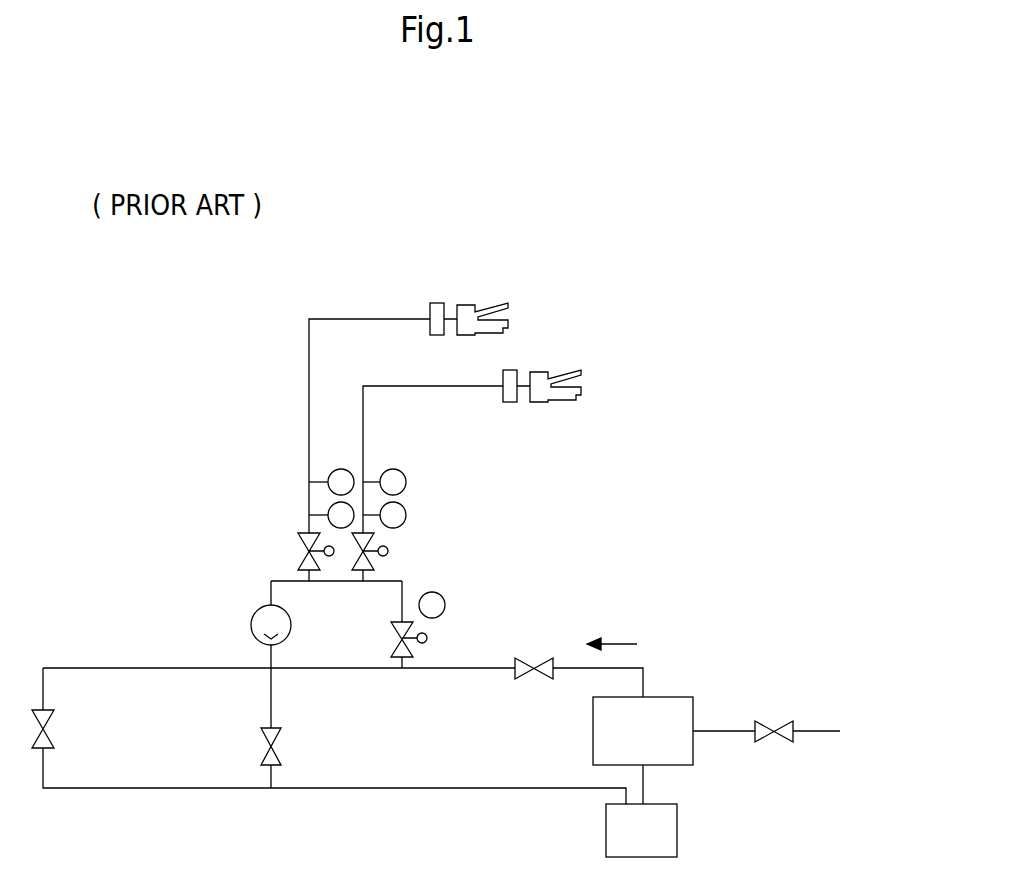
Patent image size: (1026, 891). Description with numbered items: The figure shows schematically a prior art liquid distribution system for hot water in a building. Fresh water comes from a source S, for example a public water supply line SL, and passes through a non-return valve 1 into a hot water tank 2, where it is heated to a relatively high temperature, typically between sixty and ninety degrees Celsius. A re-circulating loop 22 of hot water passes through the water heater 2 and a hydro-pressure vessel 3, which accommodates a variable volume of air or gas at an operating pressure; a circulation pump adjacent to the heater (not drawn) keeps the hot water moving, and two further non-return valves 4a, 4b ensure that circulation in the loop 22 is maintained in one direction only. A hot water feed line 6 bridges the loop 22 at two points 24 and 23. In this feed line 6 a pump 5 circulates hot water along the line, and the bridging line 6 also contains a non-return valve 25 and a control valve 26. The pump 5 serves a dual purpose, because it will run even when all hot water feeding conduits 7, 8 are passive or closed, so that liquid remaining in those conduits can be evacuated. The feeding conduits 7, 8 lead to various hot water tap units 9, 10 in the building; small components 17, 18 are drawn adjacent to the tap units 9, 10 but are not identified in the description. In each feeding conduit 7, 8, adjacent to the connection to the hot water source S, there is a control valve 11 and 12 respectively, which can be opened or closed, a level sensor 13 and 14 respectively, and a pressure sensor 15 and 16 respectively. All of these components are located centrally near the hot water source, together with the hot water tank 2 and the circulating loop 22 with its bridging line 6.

The non-return valve 1 is at (765, 720).
The hot water tank 2 is at (663, 697).
The hydro-pressure vessel 3 is at (677, 822).
The non-return valve 4a is at (520, 662).
The non-return valve 4b is at (55, 738).
The pump 5 is at (252, 620).
The hot water feed line 6 is at (381, 582).
The hot water feeding conduit 7 is at (309, 388).
The hot water feeding conduit 8 is at (364, 448).
The hot water tap unit 9 is at (468, 305).
The hot water tap unit 10 is at (540, 372).
The control valve 11 is at (300, 541).
The control valve 12 is at (373, 568).
The level sensor 13 is at (329, 514).
The level sensor 14 is at (406, 510).
The pressure sensor 15 is at (329, 480).
The pressure sensor 16 is at (406, 478).
The nozzle connector 17 is at (437, 303).
The nozzle connector 18 is at (511, 370).
The re-circulating loop 22 is at (120, 790).
The bridging point 23 is at (270, 790).
The bridging point 24 is at (402, 670).
The non-return valve 25 is at (263, 757).
The control valve 26 is at (412, 653).
The source of fresh water S is at (658, 559).
The public water supply line SL is at (833, 731).